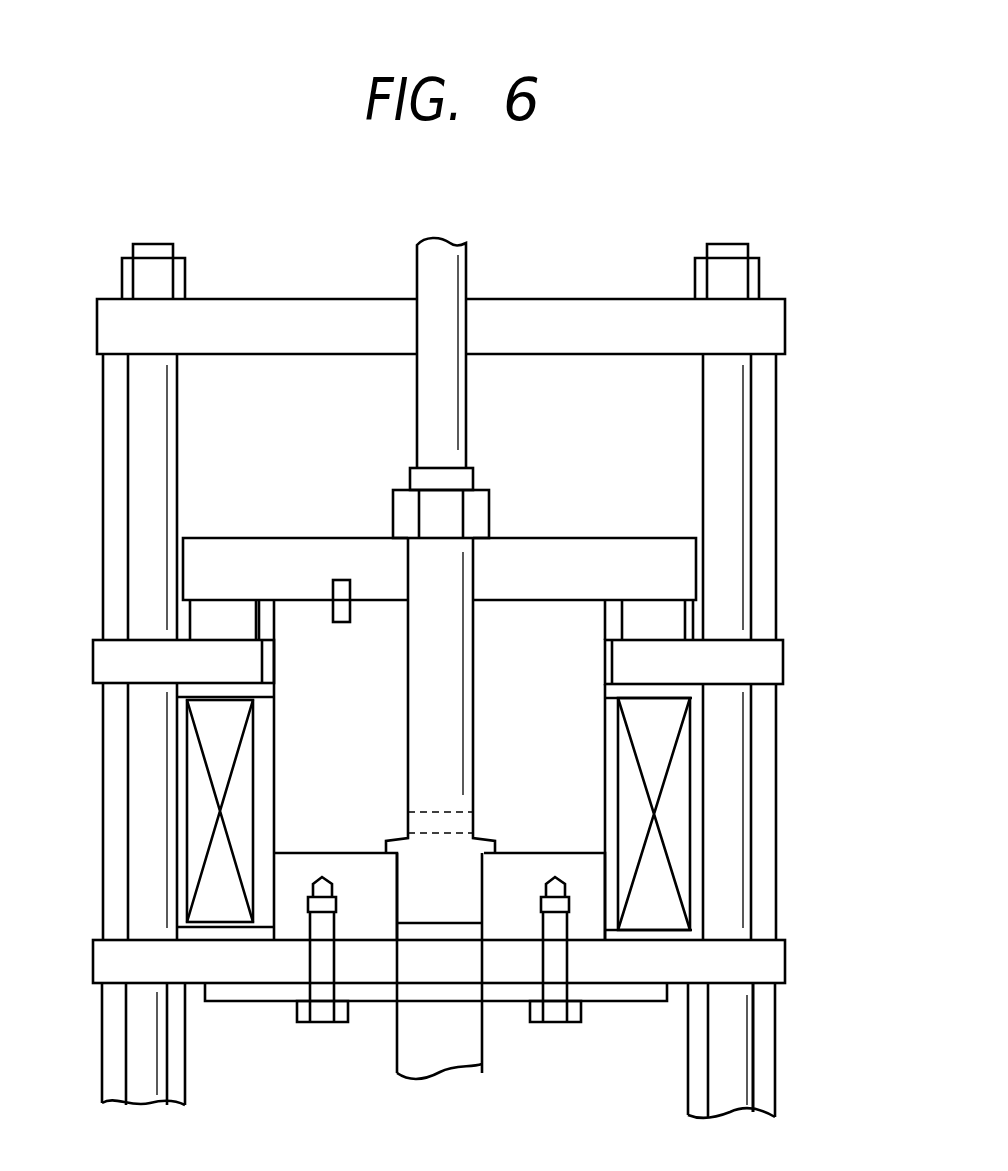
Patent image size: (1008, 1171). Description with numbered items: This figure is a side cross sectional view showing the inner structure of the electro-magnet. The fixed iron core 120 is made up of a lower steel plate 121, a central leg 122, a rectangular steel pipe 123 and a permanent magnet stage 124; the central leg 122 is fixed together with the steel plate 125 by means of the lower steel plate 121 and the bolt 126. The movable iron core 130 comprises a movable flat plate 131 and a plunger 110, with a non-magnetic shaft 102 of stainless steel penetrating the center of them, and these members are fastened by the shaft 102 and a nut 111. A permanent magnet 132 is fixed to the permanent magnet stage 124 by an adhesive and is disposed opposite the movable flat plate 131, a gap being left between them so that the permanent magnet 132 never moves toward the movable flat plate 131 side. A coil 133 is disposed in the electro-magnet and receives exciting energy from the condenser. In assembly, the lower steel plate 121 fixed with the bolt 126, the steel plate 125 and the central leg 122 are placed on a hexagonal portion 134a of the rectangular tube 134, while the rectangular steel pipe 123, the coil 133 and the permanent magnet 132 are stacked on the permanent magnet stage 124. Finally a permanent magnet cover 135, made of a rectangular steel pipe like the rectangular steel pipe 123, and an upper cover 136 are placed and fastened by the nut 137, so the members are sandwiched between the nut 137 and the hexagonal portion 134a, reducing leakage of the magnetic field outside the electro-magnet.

The non-magnetic shaft 102 is at (465, 716).
The plunger 110 is at (383, 620).
The nut 111 is at (482, 513).
The fixed iron core 120 is at (760, 962).
The lower steel plate 121 is at (633, 972).
The central leg 122 is at (366, 922).
The rectangular steel pipe 123 is at (108, 820).
The permanent magnet stage 124 is at (100, 648).
The steel plate 125 is at (250, 985).
The bolt 126 is at (556, 1022).
The movable iron core 130 is at (678, 565).
The movable flat plate 131 is at (248, 552).
The permanent magnet 132 is at (630, 626).
The coil 133 is at (677, 792).
The rectangular tube 134 is at (801, 1050).
The hexagonal portion 134a is at (767, 1015).
The permanent magnet cover 135 is at (115, 431).
The upper cover 136 is at (300, 315).
The nut 137 is at (118, 272).